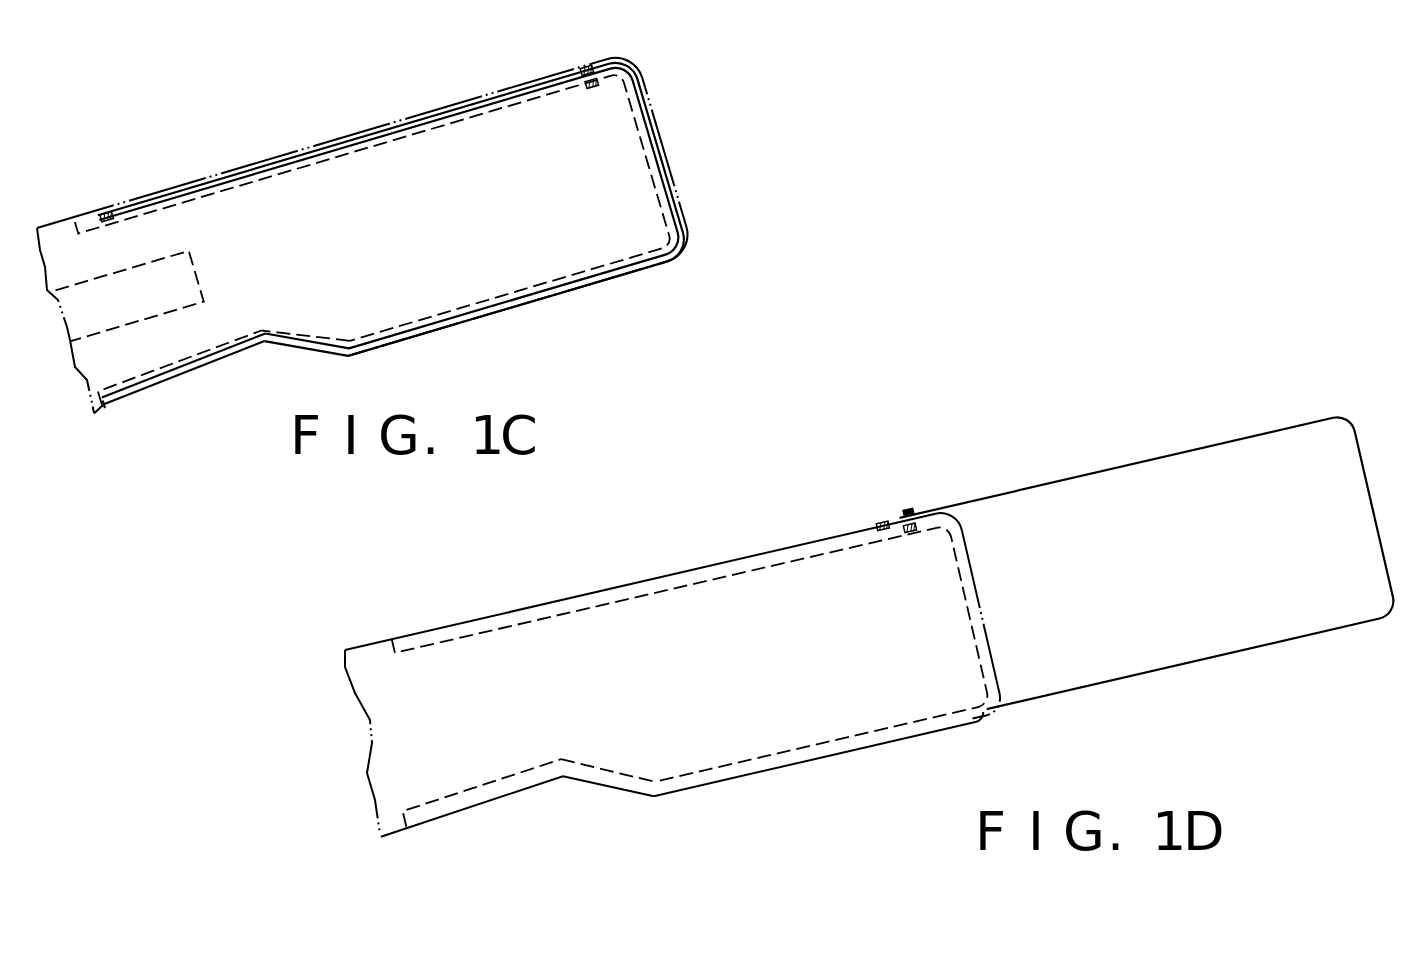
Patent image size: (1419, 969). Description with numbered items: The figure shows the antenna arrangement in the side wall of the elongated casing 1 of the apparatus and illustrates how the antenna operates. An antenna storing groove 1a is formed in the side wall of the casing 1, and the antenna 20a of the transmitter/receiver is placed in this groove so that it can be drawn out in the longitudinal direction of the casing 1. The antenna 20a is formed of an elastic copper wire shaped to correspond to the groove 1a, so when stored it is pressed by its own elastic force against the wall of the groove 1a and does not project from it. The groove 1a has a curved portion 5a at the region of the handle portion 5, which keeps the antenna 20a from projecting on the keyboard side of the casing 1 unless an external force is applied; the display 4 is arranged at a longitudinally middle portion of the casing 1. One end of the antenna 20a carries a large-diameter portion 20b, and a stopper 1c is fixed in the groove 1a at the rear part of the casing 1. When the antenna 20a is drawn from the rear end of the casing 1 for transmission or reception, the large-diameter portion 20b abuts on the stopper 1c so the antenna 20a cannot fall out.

In FIG. 1C, the casing 1 is at (457, 103).
In FIG. 1D, the casing 1 is at (640, 579).
In FIG. 1C, the antenna storing groove 1a is at (358, 150).
In FIG. 1D, the antenna storing groove 1a is at (758, 566).
In FIG. 1C, the stopper 1c is at (592, 92).
In FIG. 1D, the stopper 1c is at (910, 510).
In FIG. 1C, the display 4 is at (197, 272).
In FIG. 1C, the handle portion 5 is at (145, 397).
In FIG. 1D, the handle portion 5 is at (448, 814).
In FIG. 1C, the curved portion 5a is at (308, 340).
In FIG. 1D, the curved portion 5a is at (633, 792).
In FIG. 1C, the antenna 20a is at (557, 83).
In FIG. 1D, the antenna 20a is at (1107, 467).
In FIG. 1C, the large-diameter portion 20b is at (102, 212).
In FIG. 1D, the large-diameter portion 20b is at (885, 532).